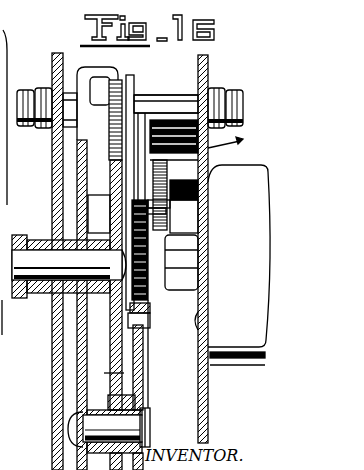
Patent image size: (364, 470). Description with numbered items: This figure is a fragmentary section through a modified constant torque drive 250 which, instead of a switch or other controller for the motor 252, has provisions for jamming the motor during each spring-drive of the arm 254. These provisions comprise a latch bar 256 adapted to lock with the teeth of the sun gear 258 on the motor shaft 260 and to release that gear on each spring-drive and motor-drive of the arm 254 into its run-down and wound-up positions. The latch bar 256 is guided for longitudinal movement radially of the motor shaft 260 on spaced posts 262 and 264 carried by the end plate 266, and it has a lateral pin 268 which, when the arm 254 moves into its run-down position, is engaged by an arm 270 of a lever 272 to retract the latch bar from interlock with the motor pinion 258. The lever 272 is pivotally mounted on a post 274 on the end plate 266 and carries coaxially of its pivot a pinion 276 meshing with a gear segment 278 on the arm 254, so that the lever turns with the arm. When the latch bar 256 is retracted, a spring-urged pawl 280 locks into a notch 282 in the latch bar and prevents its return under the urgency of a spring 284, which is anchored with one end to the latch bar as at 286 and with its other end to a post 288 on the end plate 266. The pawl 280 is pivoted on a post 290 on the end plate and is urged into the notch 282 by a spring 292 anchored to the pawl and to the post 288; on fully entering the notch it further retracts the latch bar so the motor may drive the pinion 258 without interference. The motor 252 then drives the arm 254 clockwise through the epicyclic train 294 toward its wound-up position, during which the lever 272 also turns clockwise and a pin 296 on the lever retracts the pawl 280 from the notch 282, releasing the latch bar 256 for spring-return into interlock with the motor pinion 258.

The constant torque drive 250 is at (150, 81).
The motor 252 is at (238, 180).
The arm 254 is at (76, 200).
The latch bar 256 is at (110, 206).
The sun gear 258 is at (145, 294).
The motor shaft 260 is at (170, 273).
The post 262 is at (184, 206).
The post 264 is at (166, 183).
The end plate 266 is at (209, 390).
The lateral pin 268 is at (118, 178).
The arm 270 is at (108, 237).
The lever 272 is at (128, 115).
The post 274 is at (161, 120).
The pinion 276 is at (95, 70).
The gear segment 278 is at (120, 80).
The pawl 280 is at (208, 143).
The notch 282 is at (170, 205).
The spring 284 is at (181, 262).
The anchor 286 is at (37, 261).
The post 288 is at (162, 278).
The post 290 is at (209, 156).
The spring 292 is at (166, 212).
The epicyclic train 294 is at (149, 338).
The pin 296 is at (165, 121).